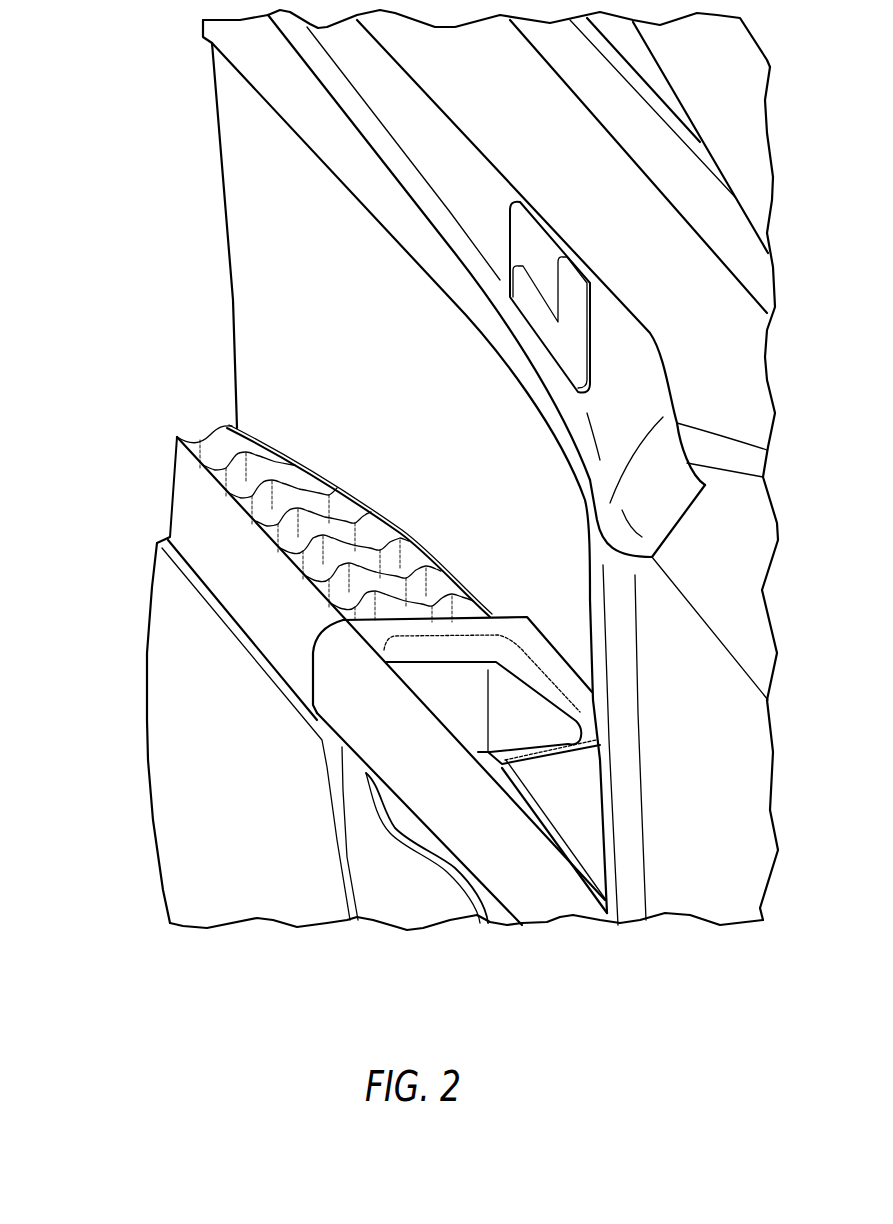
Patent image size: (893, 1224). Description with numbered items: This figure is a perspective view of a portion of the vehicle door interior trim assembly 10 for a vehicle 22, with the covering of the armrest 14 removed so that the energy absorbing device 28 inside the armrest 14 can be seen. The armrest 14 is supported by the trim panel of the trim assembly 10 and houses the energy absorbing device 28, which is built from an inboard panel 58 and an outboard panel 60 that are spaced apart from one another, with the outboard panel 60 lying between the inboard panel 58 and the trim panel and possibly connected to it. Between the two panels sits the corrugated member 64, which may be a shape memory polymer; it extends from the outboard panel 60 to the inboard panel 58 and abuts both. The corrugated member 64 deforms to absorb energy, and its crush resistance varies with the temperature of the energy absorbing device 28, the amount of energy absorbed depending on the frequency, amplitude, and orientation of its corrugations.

The vehicle door interior trim assembly 10 is at (407, 470).
The armrest 14 is at (409, 470).
The vehicle 22 is at (263, 265).
The energy absorbing device 28 is at (344, 627).
The inboard panel 58 is at (243, 570).
The outboard panel 60 is at (428, 587).
The corrugated member 64 is at (398, 530).